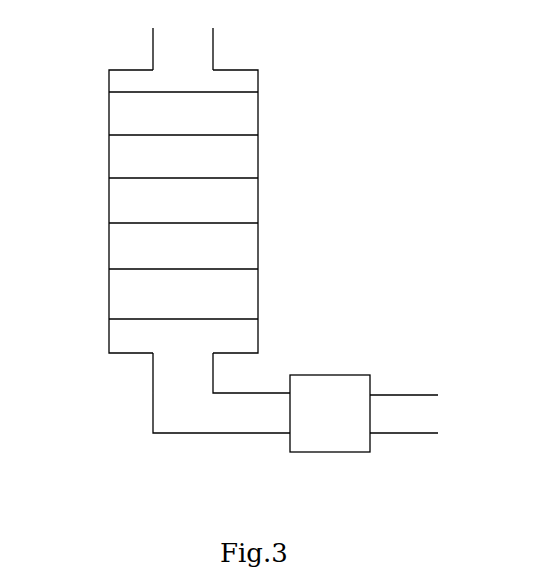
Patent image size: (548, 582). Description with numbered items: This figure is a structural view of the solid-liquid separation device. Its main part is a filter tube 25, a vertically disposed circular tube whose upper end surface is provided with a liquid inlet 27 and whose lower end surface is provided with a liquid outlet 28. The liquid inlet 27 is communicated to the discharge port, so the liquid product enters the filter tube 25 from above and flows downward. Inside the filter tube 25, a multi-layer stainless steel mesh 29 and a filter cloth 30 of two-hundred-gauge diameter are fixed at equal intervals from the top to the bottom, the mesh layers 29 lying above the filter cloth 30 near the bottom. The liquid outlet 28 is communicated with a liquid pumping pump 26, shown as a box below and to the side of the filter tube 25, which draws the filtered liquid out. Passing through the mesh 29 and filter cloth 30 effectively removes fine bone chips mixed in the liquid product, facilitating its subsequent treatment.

The filter tube 25 is at (258, 115).
The liquid pumping pump 26 is at (370, 375).
The liquid inlet 27 is at (213, 51).
The liquid outlet 28 is at (152, 372).
The multi-layer stainless steel mesh 29 is at (192, 92).
The filter cloth 30 is at (219, 320).